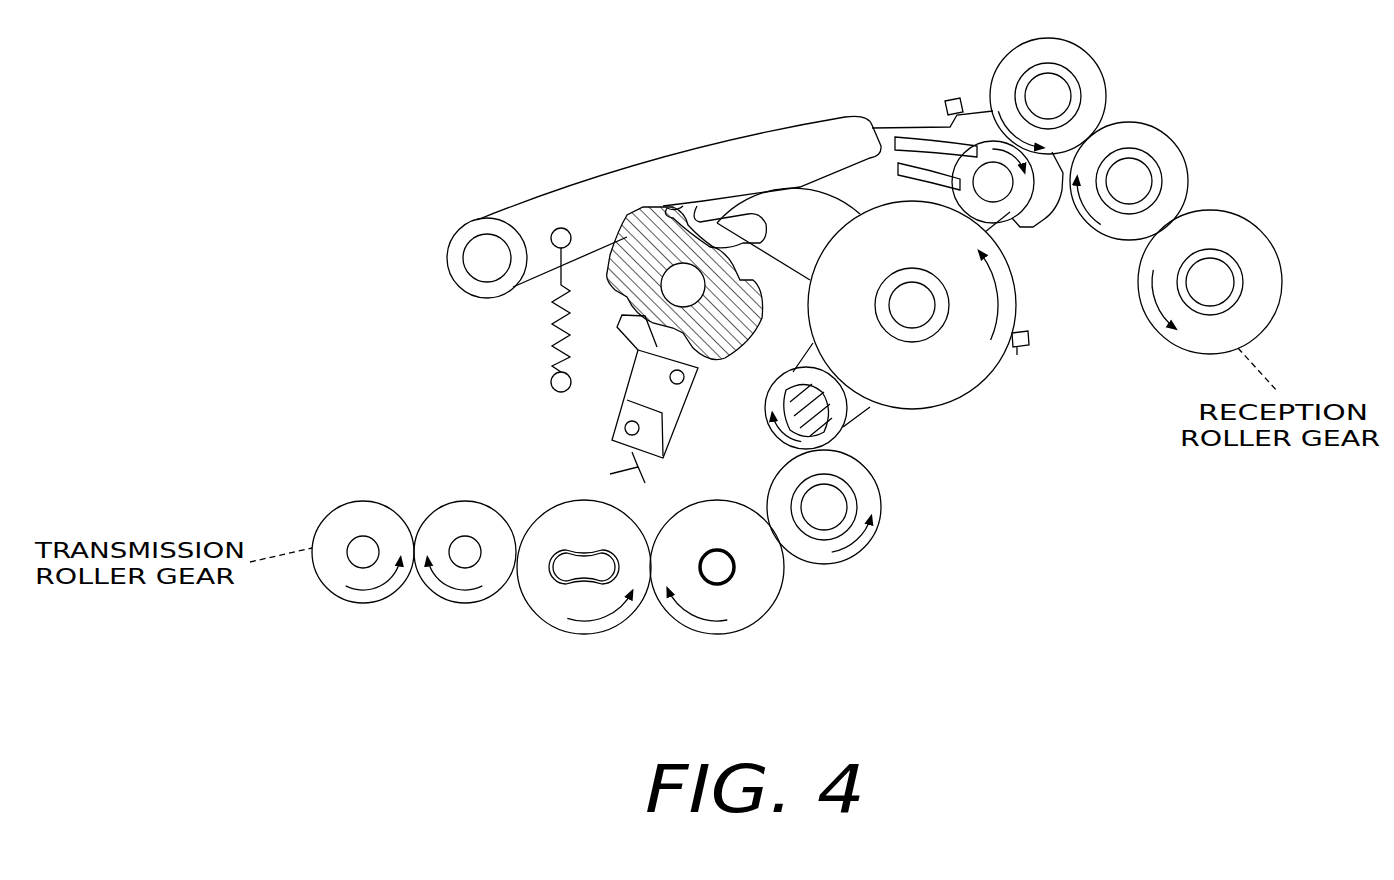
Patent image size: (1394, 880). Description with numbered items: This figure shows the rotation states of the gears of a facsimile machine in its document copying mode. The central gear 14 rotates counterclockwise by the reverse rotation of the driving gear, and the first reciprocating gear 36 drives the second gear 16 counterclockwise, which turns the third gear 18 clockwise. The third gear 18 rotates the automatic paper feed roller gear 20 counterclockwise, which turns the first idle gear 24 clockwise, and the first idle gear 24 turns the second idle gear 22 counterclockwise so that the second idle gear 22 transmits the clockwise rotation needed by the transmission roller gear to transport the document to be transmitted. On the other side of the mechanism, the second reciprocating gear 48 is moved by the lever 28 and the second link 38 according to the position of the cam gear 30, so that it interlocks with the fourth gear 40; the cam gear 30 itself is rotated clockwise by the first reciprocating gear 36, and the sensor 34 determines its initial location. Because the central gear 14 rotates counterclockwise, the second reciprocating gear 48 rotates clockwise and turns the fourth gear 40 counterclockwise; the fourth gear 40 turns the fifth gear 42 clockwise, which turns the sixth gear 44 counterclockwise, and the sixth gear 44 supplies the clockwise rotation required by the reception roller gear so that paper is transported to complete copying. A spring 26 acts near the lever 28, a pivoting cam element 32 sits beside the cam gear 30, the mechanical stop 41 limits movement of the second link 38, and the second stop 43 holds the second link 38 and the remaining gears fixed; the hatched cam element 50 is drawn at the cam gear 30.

The central gear 14 is at (960, 390).
The second gear 16 is at (880, 502).
The third gear 18 is at (775, 605).
The automatic paper feed roller gear 20 is at (532, 613).
The second idle gear 22 is at (330, 598).
The first idle gear 24 is at (438, 597).
The spring 26 is at (551, 352).
The lever 28 is at (728, 150).
The cam gear 30 is at (697, 232).
The pivoting cam element 32 is at (795, 202).
The sensor 34 is at (675, 435).
The first reciprocating gear 36 is at (840, 432).
The second link 38 is at (1040, 212).
The fourth gear 40 is at (1090, 73).
The mechanical stop 41 is at (948, 100).
The fifth gear 42 is at (1165, 148).
The second stop 43 is at (1017, 356).
The sixth gear 44 is at (1224, 224).
The second reciprocating gear 48 is at (1010, 207).
The cam 50 is at (720, 348).